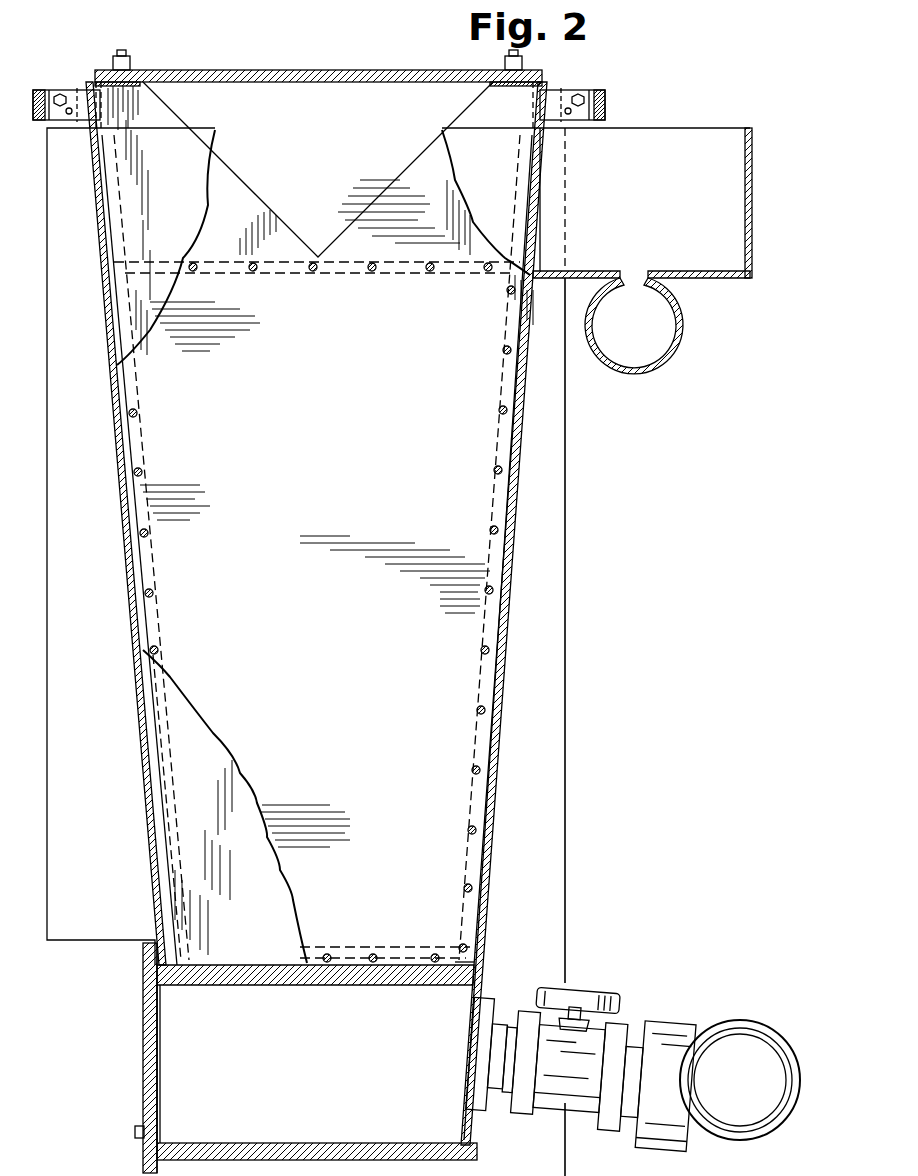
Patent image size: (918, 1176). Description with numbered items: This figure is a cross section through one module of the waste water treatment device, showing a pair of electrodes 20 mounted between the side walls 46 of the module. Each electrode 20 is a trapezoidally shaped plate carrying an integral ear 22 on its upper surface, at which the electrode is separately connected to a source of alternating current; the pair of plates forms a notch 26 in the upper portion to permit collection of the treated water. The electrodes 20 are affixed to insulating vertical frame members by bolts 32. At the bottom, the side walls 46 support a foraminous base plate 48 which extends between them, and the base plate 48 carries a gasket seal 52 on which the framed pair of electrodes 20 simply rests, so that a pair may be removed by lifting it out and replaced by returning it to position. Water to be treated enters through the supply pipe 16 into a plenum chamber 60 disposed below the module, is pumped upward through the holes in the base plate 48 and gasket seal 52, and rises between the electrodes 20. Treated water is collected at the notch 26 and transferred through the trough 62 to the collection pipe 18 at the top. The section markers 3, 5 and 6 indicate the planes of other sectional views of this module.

The supply pipe 16 is at (780, 1041).
The collection pipe 18 is at (679, 345).
The electrode 20 is at (356, 422).
The ear 22 is at (77, 90).
The notch 26 is at (322, 228).
The bolts 32 is at (498, 592).
The side walls 46 is at (147, 968).
The base plate 48 is at (226, 986).
The gasket seal 52 is at (472, 970).
The plenum chamber 60 is at (333, 1074).
The trough 62 is at (664, 199).
The section line 3- 3 is at (126, 742).
The section line 5- 5 is at (212, 203).
The section line 6- 6 is at (334, 897).